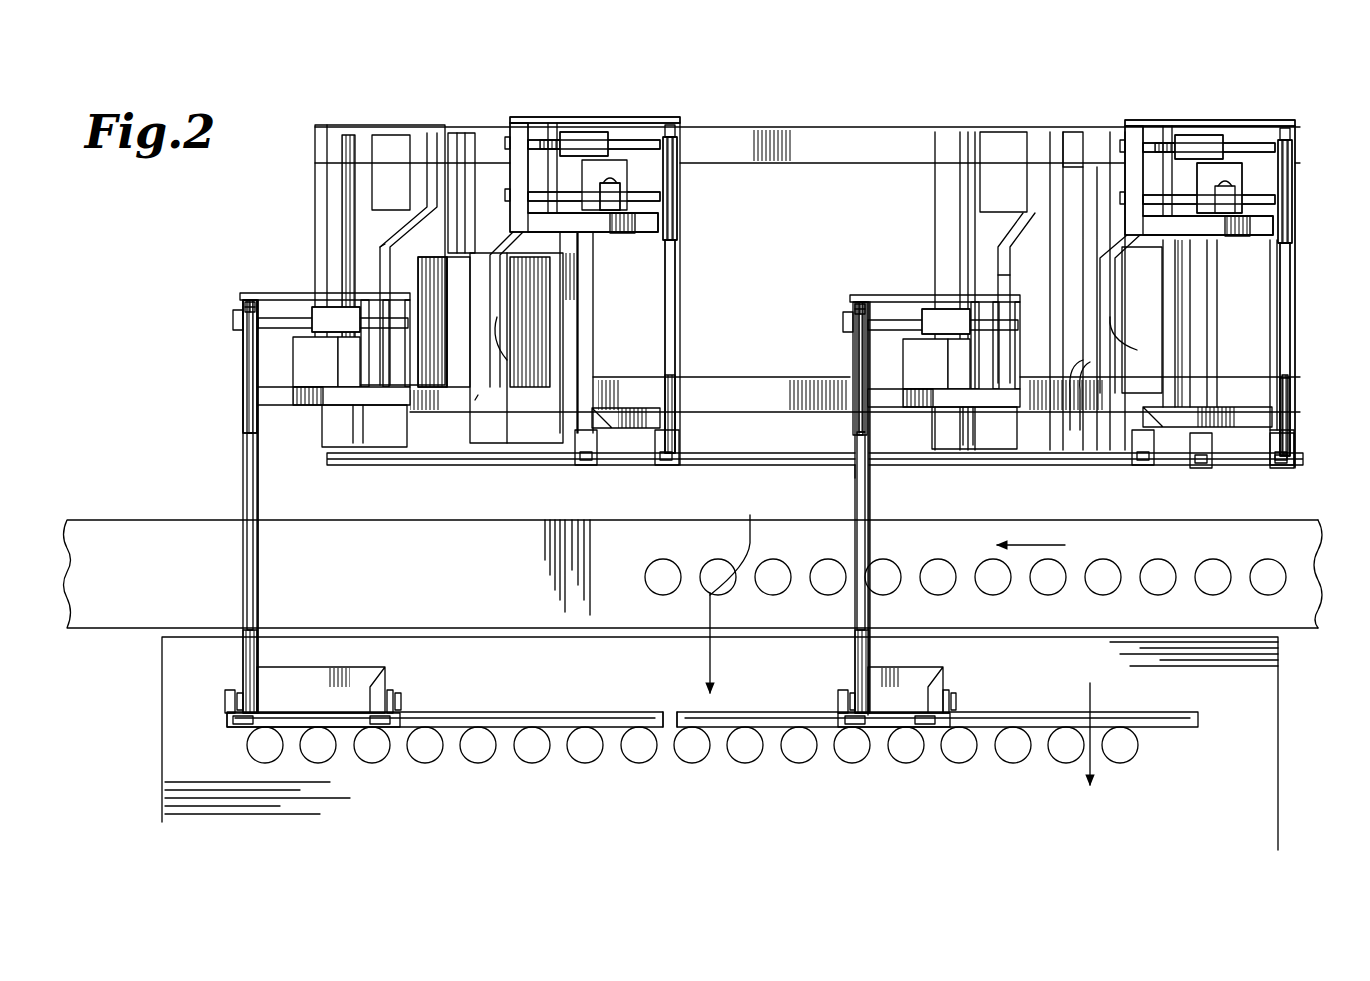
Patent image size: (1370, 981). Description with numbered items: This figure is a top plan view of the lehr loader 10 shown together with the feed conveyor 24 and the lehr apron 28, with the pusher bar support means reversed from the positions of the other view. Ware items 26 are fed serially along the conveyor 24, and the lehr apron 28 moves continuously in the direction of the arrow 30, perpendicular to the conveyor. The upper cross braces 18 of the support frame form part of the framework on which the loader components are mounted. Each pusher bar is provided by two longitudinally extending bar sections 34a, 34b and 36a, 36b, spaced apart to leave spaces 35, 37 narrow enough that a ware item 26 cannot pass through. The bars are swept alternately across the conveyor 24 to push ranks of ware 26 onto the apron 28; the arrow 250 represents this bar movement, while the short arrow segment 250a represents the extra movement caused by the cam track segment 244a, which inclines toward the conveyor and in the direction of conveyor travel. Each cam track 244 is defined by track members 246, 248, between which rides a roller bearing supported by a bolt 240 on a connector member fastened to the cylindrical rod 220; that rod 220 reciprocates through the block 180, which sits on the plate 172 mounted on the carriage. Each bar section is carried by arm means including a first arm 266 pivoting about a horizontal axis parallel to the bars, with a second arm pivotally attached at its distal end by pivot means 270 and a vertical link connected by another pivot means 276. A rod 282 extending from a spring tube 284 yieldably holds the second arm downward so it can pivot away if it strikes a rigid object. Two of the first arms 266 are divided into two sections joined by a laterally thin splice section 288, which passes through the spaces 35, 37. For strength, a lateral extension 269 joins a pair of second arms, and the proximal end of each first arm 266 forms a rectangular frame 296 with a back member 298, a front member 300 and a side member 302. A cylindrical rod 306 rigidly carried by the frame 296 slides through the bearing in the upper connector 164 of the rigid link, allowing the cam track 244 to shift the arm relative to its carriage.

The lehr loader 10 is at (874, 52).
The upper cross braces 18 is at (818, 132).
The conveyor 24 is at (1245, 533).
The ware items 26 is at (1157, 560).
The lehr apron 28 is at (1258, 730).
The arrow 30 is at (1093, 697).
The bar section 34a is at (1056, 463).
The bar section 34b is at (490, 462).
The space 35 is at (849, 478).
The bar section 36a is at (1010, 716).
The bar section 36b is at (505, 714).
The space 37 is at (665, 707).
The upper connector 164 is at (620, 190).
The plate 172 is at (1230, 170).
The block 180 is at (595, 138).
The cylindrical rod 220 is at (628, 148).
The bolt 240 is at (998, 275).
The cam track 244 is at (497, 322).
The cam track segment 244a is at (385, 244).
The track member 246 is at (478, 397).
The track member 248 is at (510, 290).
The arrow 250 is at (752, 538).
The arrow segment 250a is at (708, 593).
The first arm 266 is at (240, 498).
The lateral extension 269 is at (634, 407).
The pivot means 270 is at (1306, 438).
The pivot means 276 is at (225, 688).
The rod 282 is at (250, 458).
The spring tube 284 is at (1291, 229).
The splice section 288 is at (680, 272).
The rectangular frame 296 is at (522, 114).
The back member 298 is at (563, 117).
The front member 300 is at (633, 233).
The side member 302 is at (512, 163).
The cylindrical rod 306 is at (652, 200).